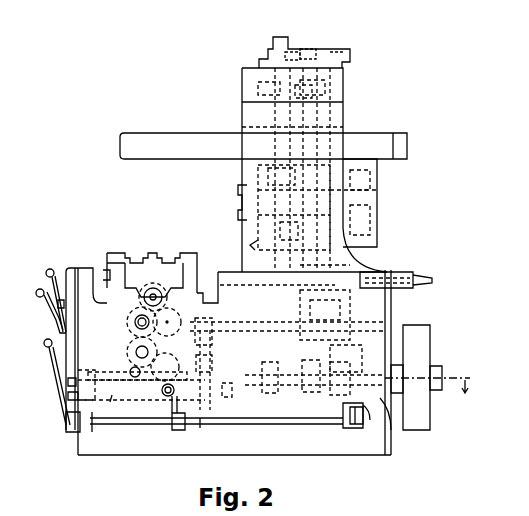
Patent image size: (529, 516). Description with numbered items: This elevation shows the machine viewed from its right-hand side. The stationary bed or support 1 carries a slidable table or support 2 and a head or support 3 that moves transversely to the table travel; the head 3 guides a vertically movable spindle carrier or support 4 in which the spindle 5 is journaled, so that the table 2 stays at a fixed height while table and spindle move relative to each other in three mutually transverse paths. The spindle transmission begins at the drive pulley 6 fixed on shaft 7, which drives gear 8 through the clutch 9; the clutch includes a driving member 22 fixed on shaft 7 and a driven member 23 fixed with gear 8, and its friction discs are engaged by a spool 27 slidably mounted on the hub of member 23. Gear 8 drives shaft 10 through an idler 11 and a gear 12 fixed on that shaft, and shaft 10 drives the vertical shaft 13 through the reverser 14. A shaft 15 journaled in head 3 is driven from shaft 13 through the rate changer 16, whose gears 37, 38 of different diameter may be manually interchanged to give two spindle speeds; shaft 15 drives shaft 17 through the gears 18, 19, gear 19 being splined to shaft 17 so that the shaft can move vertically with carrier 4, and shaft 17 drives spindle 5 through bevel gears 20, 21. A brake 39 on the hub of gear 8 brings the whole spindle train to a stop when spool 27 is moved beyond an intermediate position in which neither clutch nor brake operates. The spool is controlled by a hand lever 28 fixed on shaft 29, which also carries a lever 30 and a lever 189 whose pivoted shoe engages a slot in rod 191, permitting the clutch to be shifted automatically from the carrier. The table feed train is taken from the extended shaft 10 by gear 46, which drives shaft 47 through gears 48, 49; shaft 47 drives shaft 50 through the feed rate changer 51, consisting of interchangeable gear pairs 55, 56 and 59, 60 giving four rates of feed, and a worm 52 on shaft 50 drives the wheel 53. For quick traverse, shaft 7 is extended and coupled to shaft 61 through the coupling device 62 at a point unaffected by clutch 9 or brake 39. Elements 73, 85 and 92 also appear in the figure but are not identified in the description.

The stationary bed or support 1 is at (343, 452).
The table or support 2 is at (168, 253).
The head or support 3 is at (343, 118).
The spindle carrier or support 4 is at (250, 245).
The spindle 5 is at (237, 187).
The drive pulley 6 is at (418, 327).
The shaft 7 is at (443, 374).
The gear 8 is at (388, 417).
The clutch 9 is at (352, 409).
The shaft 10 is at (288, 301).
The idler 11 is at (430, 362).
The gear 12 is at (396, 288).
The vertical shaft 13 is at (333, 265).
The reverser 14 is at (325, 315).
The shaft 15 is at (307, 99).
The rate changer 16 is at (313, 47).
The shaft 17 is at (282, 38).
The gear 18 is at (313, 87).
The gear 19 is at (260, 84).
The bevel gear 20 is at (270, 170).
The bevel gear 21 is at (292, 240).
The driving member 22 is at (310, 393).
The driven member 23 is at (346, 358).
The spool 27 is at (338, 384).
The hand lever 28 is at (47, 346).
The shaft 29 is at (147, 426).
The lever 30 is at (364, 416).
The gear 37 is at (340, 51).
The gear 38 is at (289, 53).
The brake 39 is at (373, 406).
The gear 46 is at (218, 320).
The shaft 47 is at (119, 394).
The gear 48 is at (204, 340).
The gear 49 is at (205, 428).
The shaft 50 is at (130, 372).
The feed rate changer 51 is at (66, 383).
The worm 52 is at (134, 362).
The wheel 53 is at (162, 358).
The gear 55 is at (66, 415).
The gear 56 is at (132, 378).
The gear 59 is at (68, 397).
The gear 60 is at (70, 374).
The shaft 61 is at (232, 391).
The coupling device 62 is at (270, 362).
The gear 73 is at (158, 292).
The lever 85 is at (48, 270).
The lever 92 is at (36, 293).
The lever 189 is at (178, 430).
The rod 191 is at (166, 397).